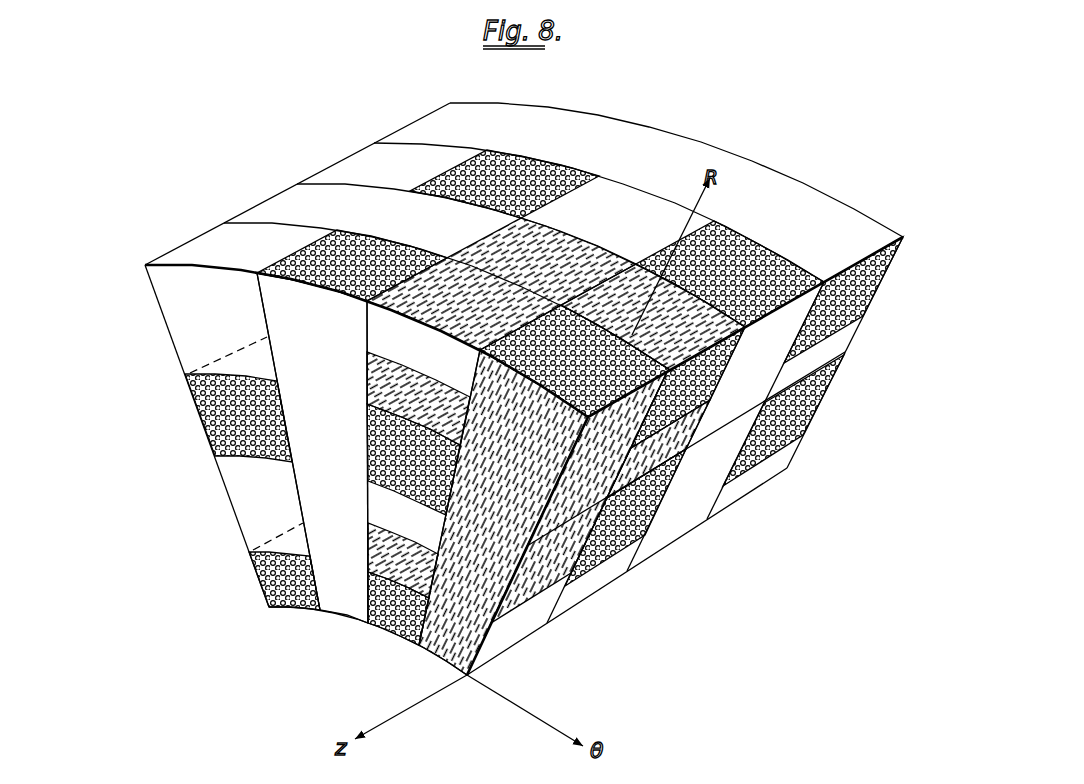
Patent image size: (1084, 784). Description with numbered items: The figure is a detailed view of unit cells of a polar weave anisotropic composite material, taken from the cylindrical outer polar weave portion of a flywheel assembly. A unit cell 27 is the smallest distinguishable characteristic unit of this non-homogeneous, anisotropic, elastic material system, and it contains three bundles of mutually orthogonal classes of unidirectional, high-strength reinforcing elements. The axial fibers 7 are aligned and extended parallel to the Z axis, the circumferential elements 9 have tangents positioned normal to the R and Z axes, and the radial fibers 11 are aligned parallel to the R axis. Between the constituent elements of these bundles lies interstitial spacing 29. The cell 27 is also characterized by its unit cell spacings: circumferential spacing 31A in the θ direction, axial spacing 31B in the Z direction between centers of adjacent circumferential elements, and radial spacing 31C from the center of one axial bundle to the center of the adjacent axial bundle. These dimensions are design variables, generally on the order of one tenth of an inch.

The axial fibers 7 is at (366, 425).
The circumferential elements 9 is at (768, 428).
The radial fibers 11 is at (397, 270).
The unit cell 27 is at (412, 124).
The interstitial spacing 29 is at (200, 247).
The circumferential unit cell spacing 31A is at (432, 220).
The axial unit cell spacing 31B is at (758, 470).
The radial unit cell spacing 31C is at (268, 607).